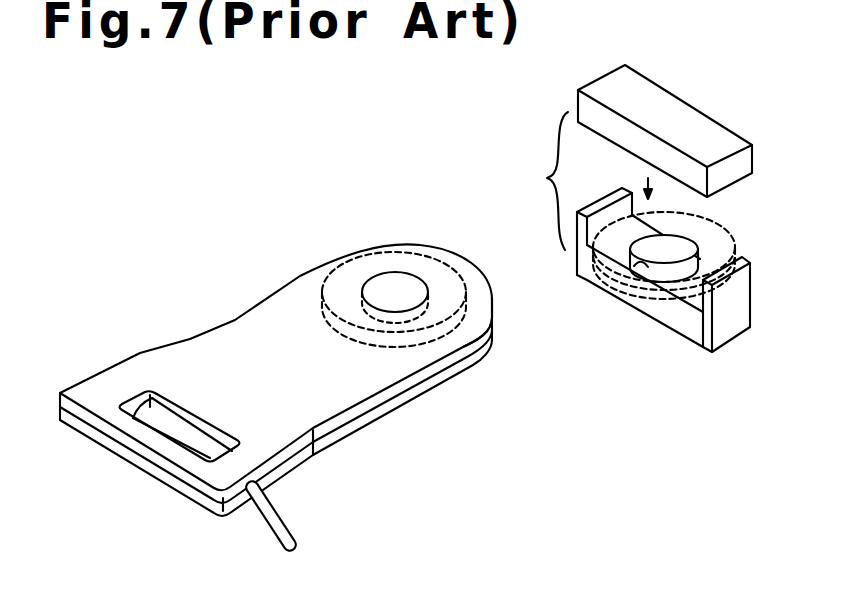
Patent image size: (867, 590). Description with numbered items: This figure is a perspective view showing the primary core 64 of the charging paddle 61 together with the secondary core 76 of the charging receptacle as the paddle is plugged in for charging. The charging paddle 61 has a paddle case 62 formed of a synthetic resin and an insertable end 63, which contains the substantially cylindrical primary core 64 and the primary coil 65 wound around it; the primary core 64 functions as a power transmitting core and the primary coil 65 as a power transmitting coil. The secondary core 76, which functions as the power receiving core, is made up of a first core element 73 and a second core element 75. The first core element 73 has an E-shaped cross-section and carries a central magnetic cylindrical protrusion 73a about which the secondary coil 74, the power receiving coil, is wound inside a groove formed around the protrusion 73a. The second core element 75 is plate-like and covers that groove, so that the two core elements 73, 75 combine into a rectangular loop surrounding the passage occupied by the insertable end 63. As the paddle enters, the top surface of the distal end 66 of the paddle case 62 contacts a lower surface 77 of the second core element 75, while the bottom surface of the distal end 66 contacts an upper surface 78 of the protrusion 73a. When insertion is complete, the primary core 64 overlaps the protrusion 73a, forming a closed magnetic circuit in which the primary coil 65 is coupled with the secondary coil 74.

The charging paddle 61 is at (143, 347).
The paddle case 62 is at (220, 338).
The insertable end 63 is at (427, 357).
The primary core 64 is at (380, 282).
The primary coil 65 is at (470, 363).
The distal end 66 is at (473, 278).
The first core element 73 is at (693, 338).
The protrusion 73a is at (670, 265).
The secondary coil 74 is at (725, 228).
The second core element 75 is at (692, 112).
The secondary core 76 is at (537, 181).
The lower surface 77 is at (638, 168).
The upper surface 78 is at (647, 262).